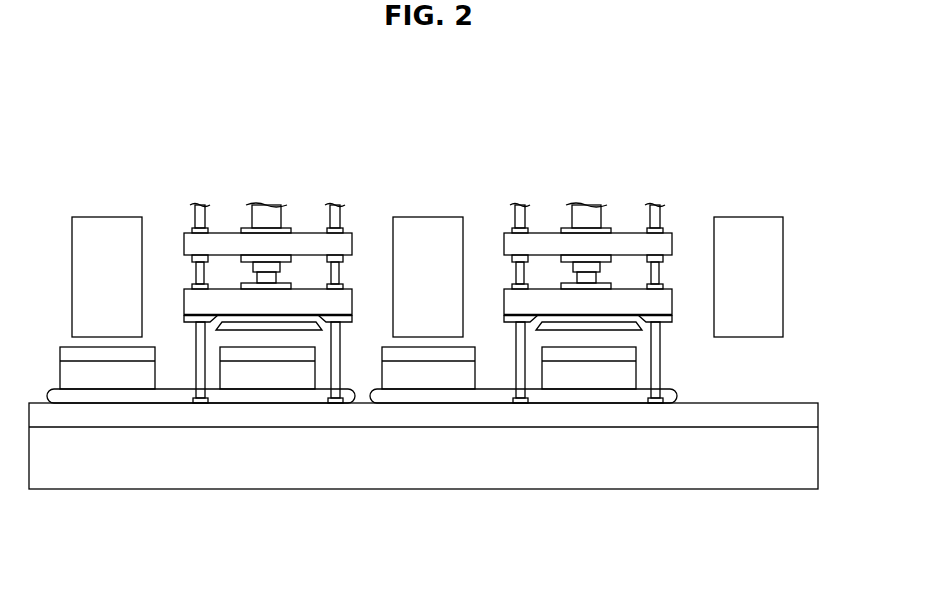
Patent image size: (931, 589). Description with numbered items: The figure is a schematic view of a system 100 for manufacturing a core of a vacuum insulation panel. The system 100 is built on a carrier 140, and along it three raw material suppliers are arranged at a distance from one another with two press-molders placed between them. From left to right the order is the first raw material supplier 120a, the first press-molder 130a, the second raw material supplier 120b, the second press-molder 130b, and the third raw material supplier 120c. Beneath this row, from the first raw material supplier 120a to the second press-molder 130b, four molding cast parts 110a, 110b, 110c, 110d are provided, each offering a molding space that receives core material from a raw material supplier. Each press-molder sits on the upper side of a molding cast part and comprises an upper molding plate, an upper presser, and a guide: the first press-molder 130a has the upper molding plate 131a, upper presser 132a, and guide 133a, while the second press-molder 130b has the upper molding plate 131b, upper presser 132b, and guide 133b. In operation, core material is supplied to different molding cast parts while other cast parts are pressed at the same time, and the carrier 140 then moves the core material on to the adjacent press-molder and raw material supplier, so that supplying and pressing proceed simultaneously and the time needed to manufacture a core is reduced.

The system for manufacturing a core of a vacuum insulation panel 100 is at (99, 75).
The first molding cast part 110a is at (113, 378).
The second molding cast part 110b is at (273, 378).
The third molding cast part 110c is at (435, 378).
The fourth molding cast part 110d is at (593, 378).
The first raw material supplier 120a is at (100, 228).
The second raw material supplier 120b is at (430, 228).
The third raw material supplier 120c is at (752, 230).
The first press-molder 130a is at (308, 147).
The second press-molder 130b is at (587, 259).
The upper molding plate 131a is at (313, 300).
The upper molding plate 131b is at (588, 242).
The upper presser 132a is at (263, 212).
The upper presser 132b is at (586, 221).
The guide 133a is at (199, 212).
The guide 133b is at (584, 278).
The carrier 140 is at (728, 413).